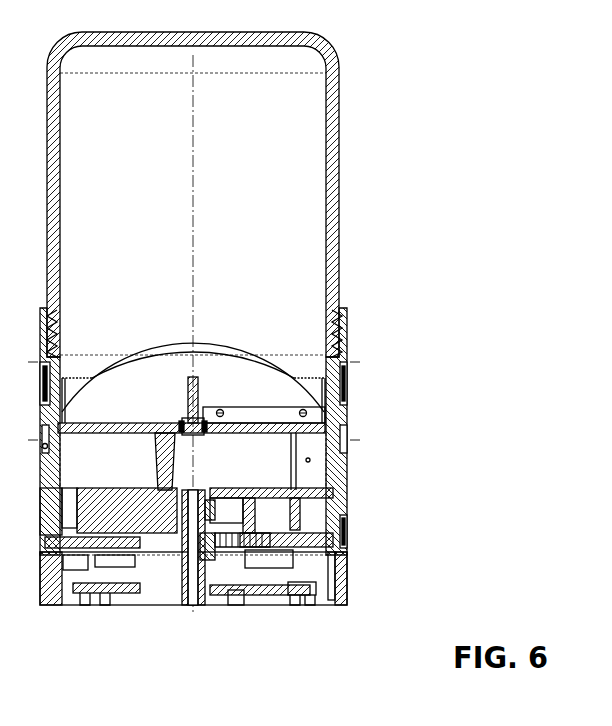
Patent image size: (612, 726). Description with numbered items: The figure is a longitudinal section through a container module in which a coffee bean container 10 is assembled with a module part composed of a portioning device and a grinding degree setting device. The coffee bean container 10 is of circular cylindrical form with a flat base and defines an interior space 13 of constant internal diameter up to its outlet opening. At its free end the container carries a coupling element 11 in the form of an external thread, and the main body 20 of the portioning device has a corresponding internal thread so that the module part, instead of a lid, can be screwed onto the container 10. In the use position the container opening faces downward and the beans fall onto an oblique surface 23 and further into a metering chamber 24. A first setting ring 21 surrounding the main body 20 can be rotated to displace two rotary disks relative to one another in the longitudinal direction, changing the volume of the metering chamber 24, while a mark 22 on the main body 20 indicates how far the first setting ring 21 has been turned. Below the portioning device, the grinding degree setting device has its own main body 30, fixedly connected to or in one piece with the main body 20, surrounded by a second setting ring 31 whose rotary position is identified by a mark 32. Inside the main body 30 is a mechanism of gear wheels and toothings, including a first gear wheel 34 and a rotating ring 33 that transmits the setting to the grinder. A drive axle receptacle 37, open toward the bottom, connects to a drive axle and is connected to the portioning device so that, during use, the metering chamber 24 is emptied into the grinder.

The coffee bean container 10 is at (333, 164).
The coupling element 11 is at (342, 312).
The interior space 13 is at (270, 212).
The main body 20 is at (346, 334).
The first setting ring 21 is at (347, 386).
The mark 22 is at (347, 436).
The oblique surface 23 is at (258, 393).
The metering chamber 24 is at (258, 473).
The main body 30 is at (349, 580).
The second setting ring 31 is at (347, 530).
The mark 32 is at (347, 496).
The rotating ring 33 is at (302, 606).
The first gear wheel 34 is at (237, 606).
The drive axle receptacle 37 is at (188, 606).